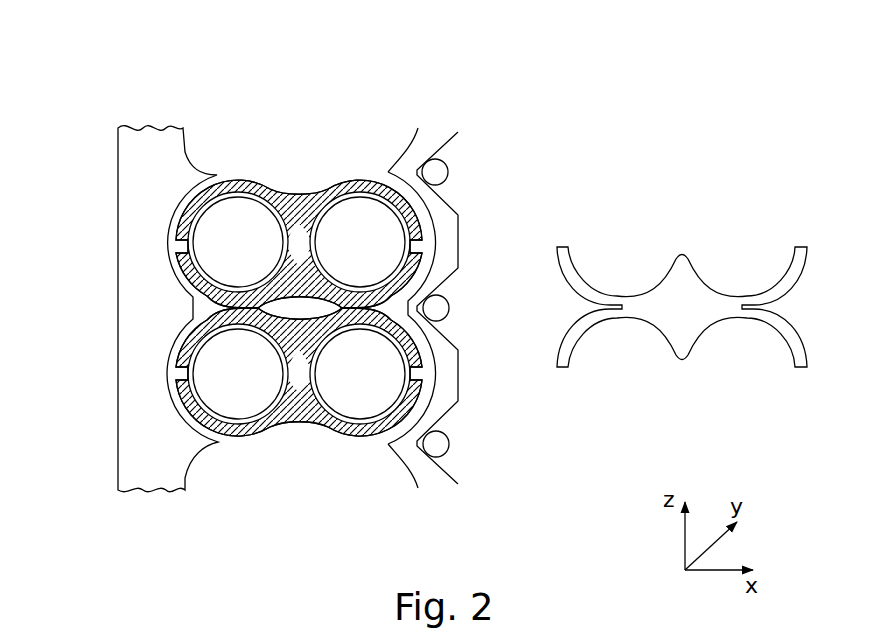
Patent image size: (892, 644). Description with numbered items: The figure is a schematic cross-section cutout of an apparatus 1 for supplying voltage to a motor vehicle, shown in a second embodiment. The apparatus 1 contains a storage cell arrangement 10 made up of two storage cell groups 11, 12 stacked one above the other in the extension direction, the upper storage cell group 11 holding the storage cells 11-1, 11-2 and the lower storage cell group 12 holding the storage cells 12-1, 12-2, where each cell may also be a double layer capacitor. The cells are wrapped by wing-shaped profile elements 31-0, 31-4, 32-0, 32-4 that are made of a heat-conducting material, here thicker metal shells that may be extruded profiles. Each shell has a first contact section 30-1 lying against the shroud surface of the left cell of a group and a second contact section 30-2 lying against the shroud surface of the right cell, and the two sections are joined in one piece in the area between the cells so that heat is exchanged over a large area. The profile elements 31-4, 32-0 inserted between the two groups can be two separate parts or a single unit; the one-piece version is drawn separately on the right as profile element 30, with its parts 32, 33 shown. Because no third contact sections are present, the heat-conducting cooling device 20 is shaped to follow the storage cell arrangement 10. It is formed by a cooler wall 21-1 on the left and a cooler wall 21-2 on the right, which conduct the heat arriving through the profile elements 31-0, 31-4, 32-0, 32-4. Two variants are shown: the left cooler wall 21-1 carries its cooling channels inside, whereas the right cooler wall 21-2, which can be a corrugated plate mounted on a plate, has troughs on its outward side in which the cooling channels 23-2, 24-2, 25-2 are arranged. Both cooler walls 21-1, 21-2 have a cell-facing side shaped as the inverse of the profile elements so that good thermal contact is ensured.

The apparatus 1 is at (99, 469).
The storage cell arrangement 10 is at (381, 503).
The heat-conducting cooling device 20 is at (153, 148).
The cooler wall 21-1 is at (138, 188).
The cooler wall 21-2 is at (448, 240).
The cooling channel 23-2 is at (442, 172).
The cooling channel 24-2 is at (440, 308).
The cooling channel 25-2 is at (440, 444).
The storage cell group 11 is at (181, 246).
The storage cell group 12 is at (181, 374).
The storage cell 11-1 is at (263, 263).
The storage cell 11-2 is at (385, 263).
The storage cell 12-1 is at (263, 394).
The storage cell 12-2 is at (385, 394).
The one-piece profile element 30 is at (640, 222).
The first contact section 30-1 is at (287, 192).
The second contact section 30-2 is at (377, 180).
The profile element 31-0 is at (242, 177).
The profile element 31-4 is at (423, 262).
The profile element part 32 is at (697, 293).
The profile element 32-0 is at (280, 440).
The profile element 32-4 is at (229, 445).
The profile element part 33 is at (678, 327).